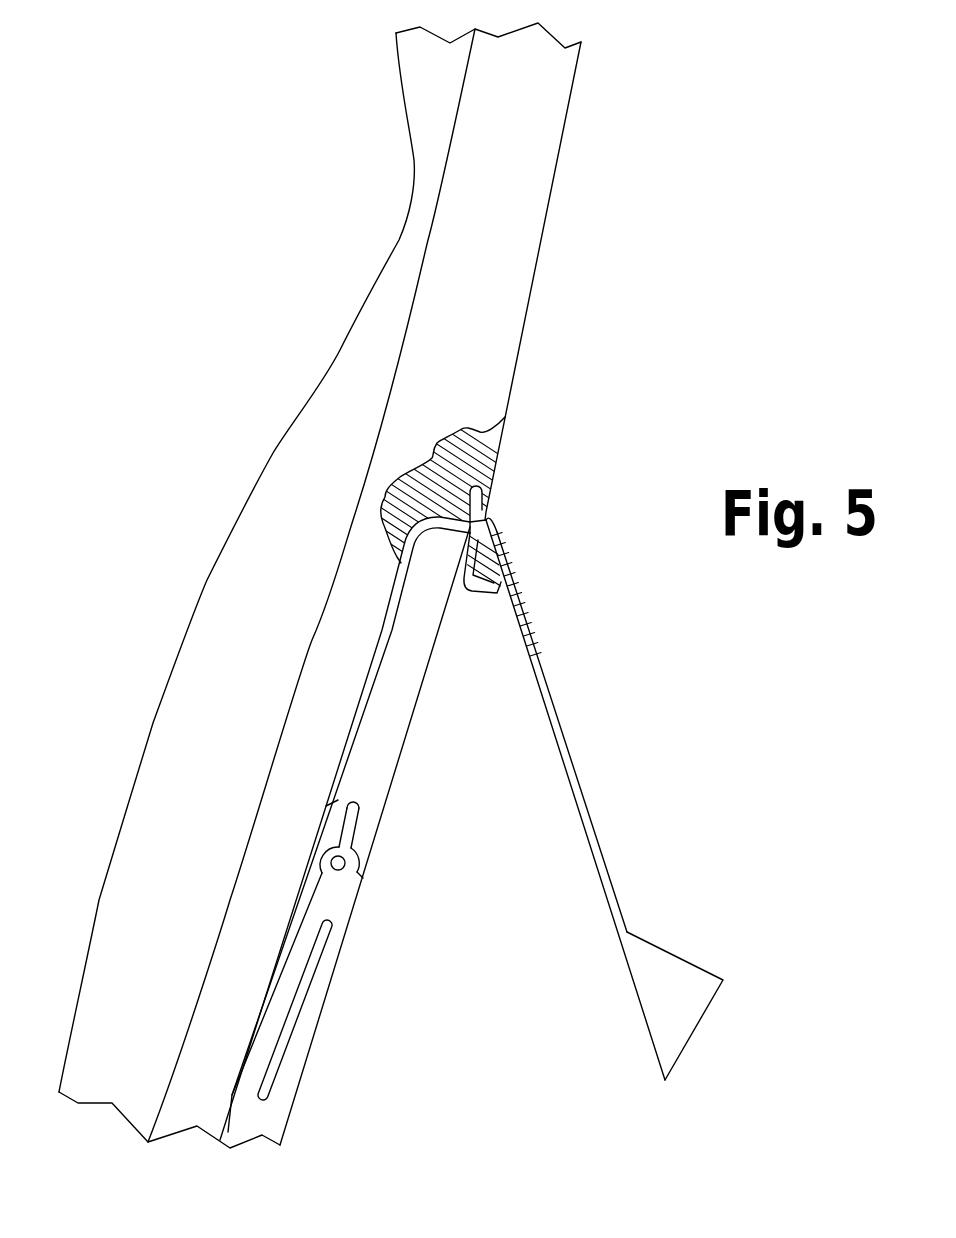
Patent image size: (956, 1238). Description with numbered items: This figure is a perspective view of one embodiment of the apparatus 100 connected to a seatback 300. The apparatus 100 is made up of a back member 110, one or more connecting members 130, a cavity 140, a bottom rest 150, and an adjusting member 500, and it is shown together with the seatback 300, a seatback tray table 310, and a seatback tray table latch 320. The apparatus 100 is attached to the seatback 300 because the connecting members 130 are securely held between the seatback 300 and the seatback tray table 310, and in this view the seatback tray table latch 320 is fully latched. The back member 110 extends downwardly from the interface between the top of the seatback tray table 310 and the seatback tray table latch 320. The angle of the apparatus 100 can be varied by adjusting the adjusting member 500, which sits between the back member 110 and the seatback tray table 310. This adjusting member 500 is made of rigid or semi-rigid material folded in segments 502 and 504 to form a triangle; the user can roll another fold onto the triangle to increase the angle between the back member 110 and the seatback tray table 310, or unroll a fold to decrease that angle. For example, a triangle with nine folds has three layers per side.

The apparatus 100 is at (595, 765).
The back member 110 is at (548, 687).
The connecting member 130 is at (470, 533).
The cavity 140 is at (683, 947).
The bottom rest 150 is at (697, 1027).
The seatback 300 is at (550, 199).
The seatback tray table 310 is at (380, 840).
The seatback tray table latch 320 is at (481, 508).
The adjusting member 500 is at (373, 828).
The segment 502 is at (463, 558).
The segment 504 is at (490, 585).